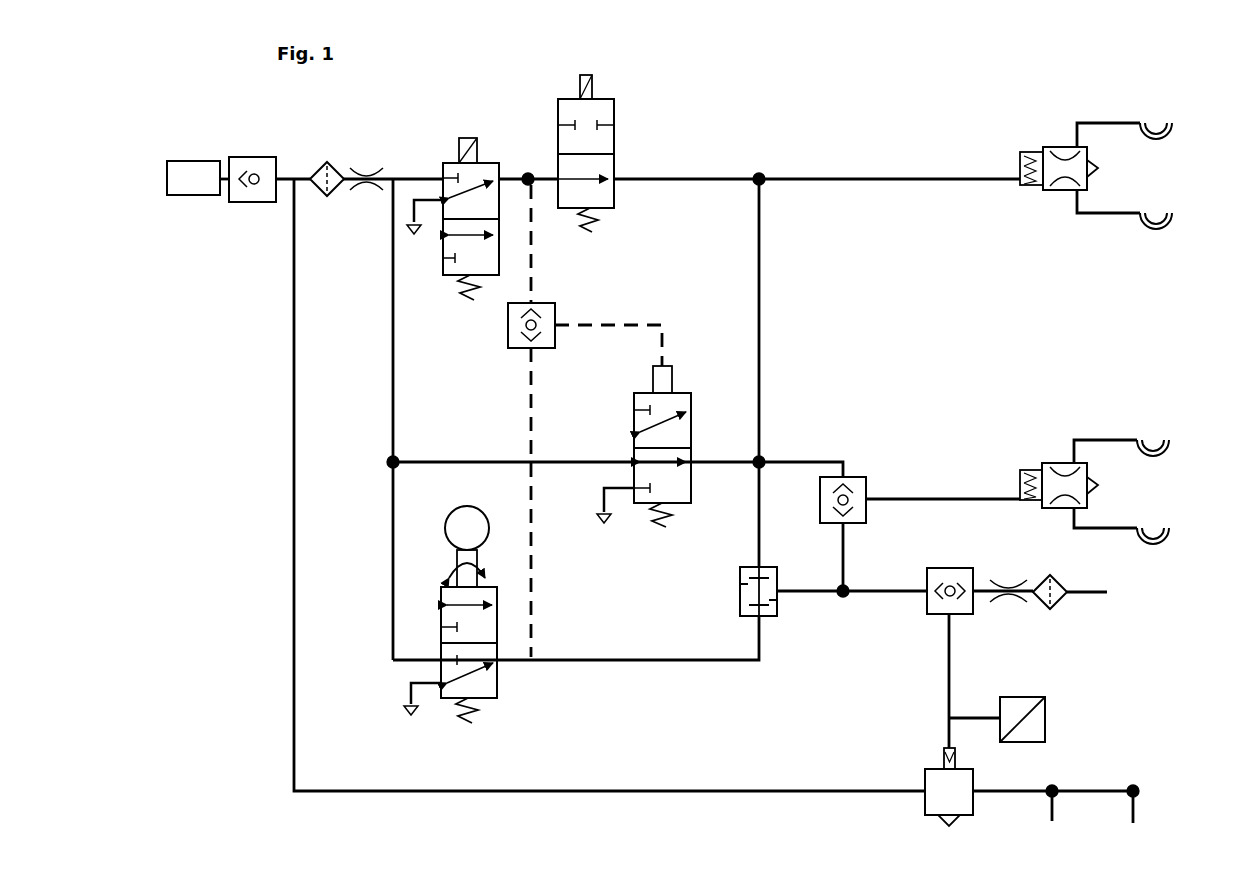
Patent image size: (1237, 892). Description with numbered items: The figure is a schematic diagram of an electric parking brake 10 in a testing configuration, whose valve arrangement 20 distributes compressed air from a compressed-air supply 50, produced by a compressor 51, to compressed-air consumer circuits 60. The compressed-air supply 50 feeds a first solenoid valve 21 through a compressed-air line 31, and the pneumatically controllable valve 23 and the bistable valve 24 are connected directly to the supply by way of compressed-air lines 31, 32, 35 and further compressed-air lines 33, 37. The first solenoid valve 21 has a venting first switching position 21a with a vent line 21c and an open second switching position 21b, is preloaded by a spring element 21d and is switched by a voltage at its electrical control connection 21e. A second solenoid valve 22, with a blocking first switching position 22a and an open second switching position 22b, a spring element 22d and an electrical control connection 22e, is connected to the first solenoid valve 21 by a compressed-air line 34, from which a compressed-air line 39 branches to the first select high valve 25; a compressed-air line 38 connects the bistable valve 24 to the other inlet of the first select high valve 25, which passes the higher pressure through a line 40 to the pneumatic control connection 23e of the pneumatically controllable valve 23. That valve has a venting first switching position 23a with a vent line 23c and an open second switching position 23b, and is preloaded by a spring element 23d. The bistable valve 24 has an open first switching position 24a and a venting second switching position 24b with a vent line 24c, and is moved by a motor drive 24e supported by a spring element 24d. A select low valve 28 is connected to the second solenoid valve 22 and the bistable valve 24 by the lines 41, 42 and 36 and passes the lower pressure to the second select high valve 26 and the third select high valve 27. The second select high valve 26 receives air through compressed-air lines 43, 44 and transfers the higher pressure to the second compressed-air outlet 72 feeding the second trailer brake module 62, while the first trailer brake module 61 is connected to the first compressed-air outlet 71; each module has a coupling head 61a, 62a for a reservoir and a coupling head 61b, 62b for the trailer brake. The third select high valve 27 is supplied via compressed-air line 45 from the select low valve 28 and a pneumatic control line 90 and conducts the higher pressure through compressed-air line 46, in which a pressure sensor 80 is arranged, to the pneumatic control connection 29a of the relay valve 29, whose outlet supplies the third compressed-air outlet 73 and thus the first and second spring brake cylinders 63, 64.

The electric parking brake 10 is at (727, 93).
The valve arrangement 20 is at (677, 85).
The first solenoid valve 21 is at (449, 213).
The first switching position 21a is at (468, 193).
The second switching position 21b is at (468, 250).
The vent line 21c is at (417, 208).
The spring element 21d is at (468, 288).
The electrical control connection 21e is at (468, 138).
The second solenoid valve 22 is at (606, 156).
The first switching position 22a is at (586, 136).
The second switching position 22b is at (583, 191).
The spring element 22d is at (588, 224).
The electrical control connection 22e is at (584, 91).
The pneumatically controllable valve 23 is at (653, 457).
The first switching position 23a is at (660, 424).
The second switching position 23b is at (660, 480).
The vent line 23c is at (607, 496).
The spring element 23d is at (665, 521).
The pneumatic control connection 23e is at (669, 382).
The bistable valve 24 is at (451, 630).
The first switching position 24a is at (466, 622).
The second switching position 24b is at (467, 674).
The vent line 24c is at (413, 688).
The spring element 24d is at (472, 714).
The motor drive 24e is at (456, 536).
The first select high valve 25 is at (550, 315).
The second select high valve 26 is at (868, 480).
The third select high valve 27 is at (967, 570).
The select low valve 28 is at (773, 580).
The relay valve 29 is at (952, 797).
The pneumatic control connection 29a is at (941, 746).
The compressed-air line 31 is at (370, 176).
The compressed-air line 32 is at (392, 322).
The compressed-air line 33 is at (392, 572).
The compressed-air line 34 is at (543, 170).
The compressed-air line 35 is at (510, 460).
The compressed-air line 36 is at (665, 658).
The compressed-air line 37 is at (633, 789).
The compressed-air line 38 is at (530, 425).
The compressed-air line 39 is at (534, 278).
The compressed-air line 40 is at (612, 323).
The compressed-air line 41 is at (710, 176).
The compressed-air line 42 is at (755, 328).
The compressed-air line 43 is at (798, 460).
The compressed-air line 44 is at (845, 565).
The compressed-air line 45 is at (880, 594).
The compressed-air line 46 is at (947, 669).
The compressed-air supply 50 is at (256, 150).
The compressor 51 is at (203, 162).
The compressed-air consumer circuits 60 is at (1202, 140).
The first trailer brake module 61 is at (1084, 155).
The coupling head 61a is at (1132, 122).
The coupling head 61b is at (1147, 212).
The second trailer brake module 62 is at (1082, 470).
The coupling head 62a is at (1136, 439).
The coupling head 62b is at (1145, 527).
The first spring brake cylinder 63 is at (1057, 806).
The second spring brake cylinder 64 is at (1138, 806).
The first compressed-air outlet 71 is at (848, 176).
The second compressed-air outlet 72 is at (920, 497).
The third compressed-air outlet 73 is at (1022, 790).
The pressure sensor 80 is at (1022, 702).
The pneumatic control line 90 is at (1078, 589).